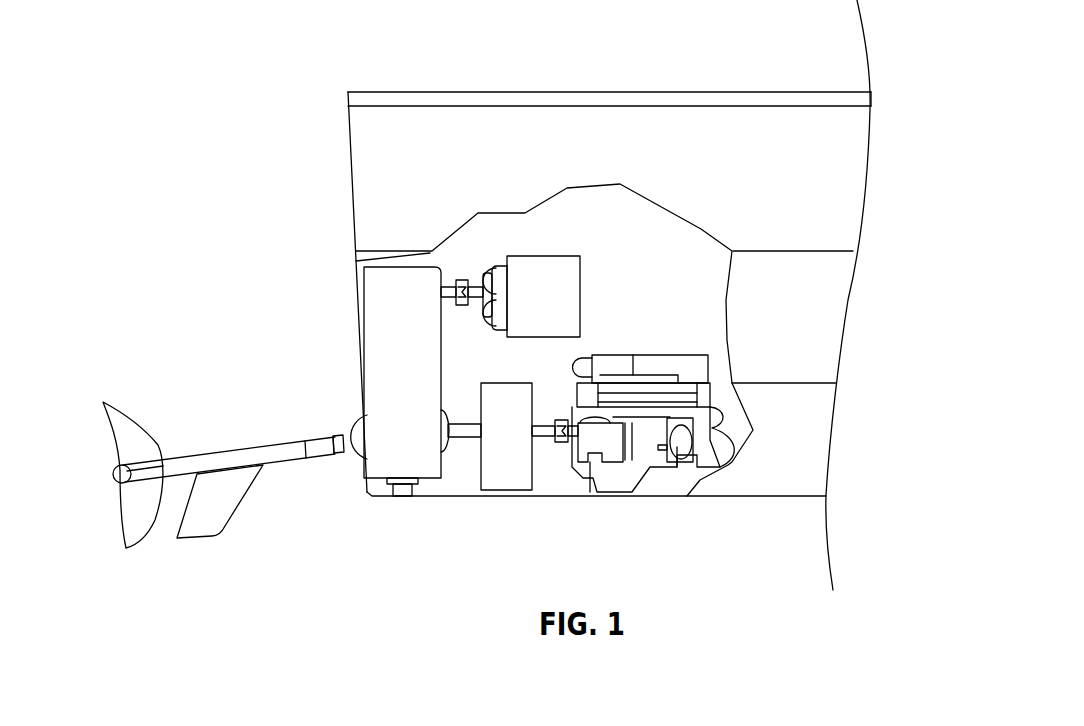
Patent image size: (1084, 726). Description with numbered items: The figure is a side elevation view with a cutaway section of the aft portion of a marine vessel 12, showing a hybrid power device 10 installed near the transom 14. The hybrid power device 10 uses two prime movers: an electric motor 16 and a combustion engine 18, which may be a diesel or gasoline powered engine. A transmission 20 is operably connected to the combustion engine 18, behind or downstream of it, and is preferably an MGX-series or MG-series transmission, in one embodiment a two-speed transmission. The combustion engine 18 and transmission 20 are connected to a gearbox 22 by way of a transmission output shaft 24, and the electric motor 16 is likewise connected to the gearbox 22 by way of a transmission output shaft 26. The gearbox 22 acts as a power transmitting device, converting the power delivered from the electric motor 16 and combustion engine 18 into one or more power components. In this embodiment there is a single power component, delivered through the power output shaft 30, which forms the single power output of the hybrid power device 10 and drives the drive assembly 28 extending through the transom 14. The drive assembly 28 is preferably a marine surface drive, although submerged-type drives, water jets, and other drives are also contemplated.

The hybrid power device 10 is at (561, 232).
The marine vessel 12 is at (596, 92).
The transom 14 is at (349, 174).
The electric motor 16 is at (583, 297).
The combustion engine 18 is at (655, 352).
The transmission 20 is at (529, 436).
The gearbox 22 is at (402, 381).
The transmission output shaft 24 is at (453, 440).
The transmission output shaft 26 is at (454, 279).
The drive assembly 28 is at (298, 458).
The power output shaft 30 is at (349, 430).